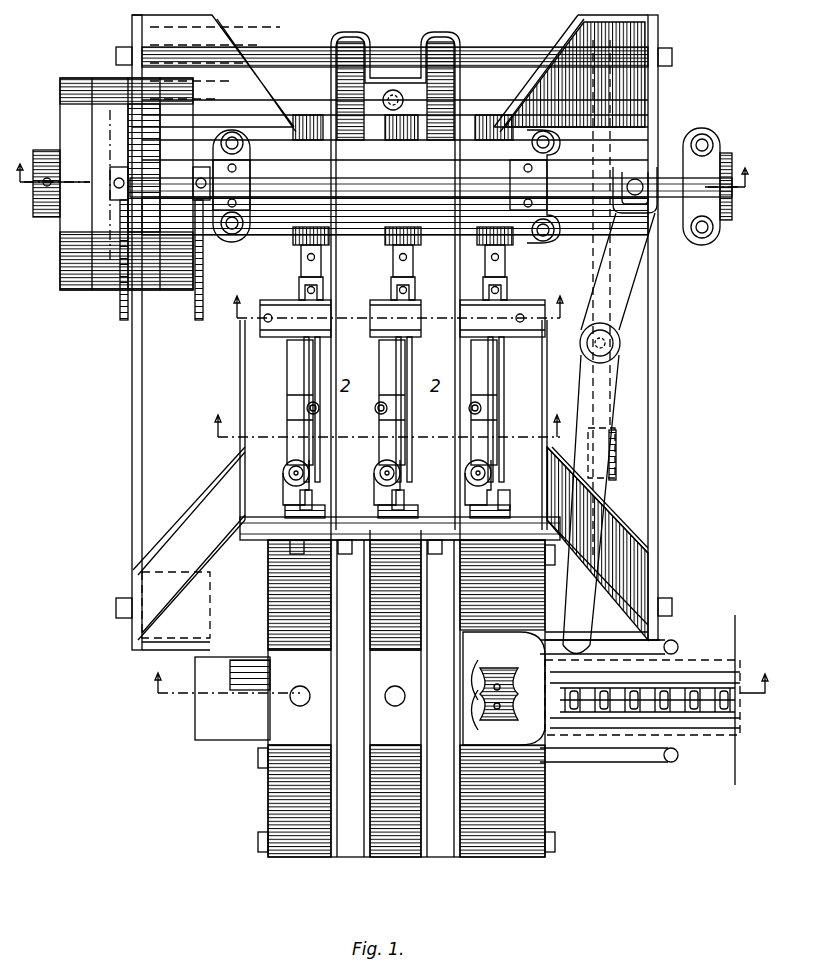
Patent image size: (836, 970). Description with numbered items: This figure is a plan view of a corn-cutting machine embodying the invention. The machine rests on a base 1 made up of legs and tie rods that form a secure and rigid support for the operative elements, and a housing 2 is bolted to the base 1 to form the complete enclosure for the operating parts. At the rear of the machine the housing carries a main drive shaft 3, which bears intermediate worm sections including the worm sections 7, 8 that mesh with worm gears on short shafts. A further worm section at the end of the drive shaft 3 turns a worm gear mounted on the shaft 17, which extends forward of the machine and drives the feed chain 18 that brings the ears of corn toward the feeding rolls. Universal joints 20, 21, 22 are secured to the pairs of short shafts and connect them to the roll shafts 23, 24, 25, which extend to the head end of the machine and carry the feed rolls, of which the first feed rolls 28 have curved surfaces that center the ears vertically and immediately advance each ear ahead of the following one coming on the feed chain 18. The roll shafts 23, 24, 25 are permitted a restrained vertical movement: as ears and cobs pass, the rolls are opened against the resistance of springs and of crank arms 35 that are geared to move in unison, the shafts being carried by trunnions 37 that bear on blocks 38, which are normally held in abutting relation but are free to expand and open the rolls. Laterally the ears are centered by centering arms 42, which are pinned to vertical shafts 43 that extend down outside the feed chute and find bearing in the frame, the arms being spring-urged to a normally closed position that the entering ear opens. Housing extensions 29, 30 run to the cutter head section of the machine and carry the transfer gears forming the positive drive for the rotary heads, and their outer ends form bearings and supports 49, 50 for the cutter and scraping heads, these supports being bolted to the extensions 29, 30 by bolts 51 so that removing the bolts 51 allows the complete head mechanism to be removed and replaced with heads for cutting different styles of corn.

The base 1 is at (218, 490).
The housing 2 is at (383, 166).
The main drive shaft 3 is at (460, 700).
The worm section 7 is at (393, 308).
The worm section 8 is at (384, 417).
The shaft 17 is at (600, 573).
The feed chain 18 is at (700, 735).
The universal joint 20 is at (304, 265).
The universal joint 21 is at (399, 262).
The universal joint 22 is at (503, 266).
The roll shaft 23 is at (300, 368).
The roll shaft 24 is at (403, 362).
The roll shaft 25 is at (490, 362).
The feed roll 28 is at (505, 720).
The housing extension 29 is at (341, 482).
The housing extension 30 is at (459, 482).
The crank arm 35 is at (300, 388).
The trunnion 37 is at (292, 516).
The block 38 is at (286, 486).
The centering arm 42 is at (668, 638).
The vertical shaft 43 is at (676, 640).
The support 49 is at (406, 698).
The support 50 is at (440, 545).
The bolts 51 is at (350, 693).